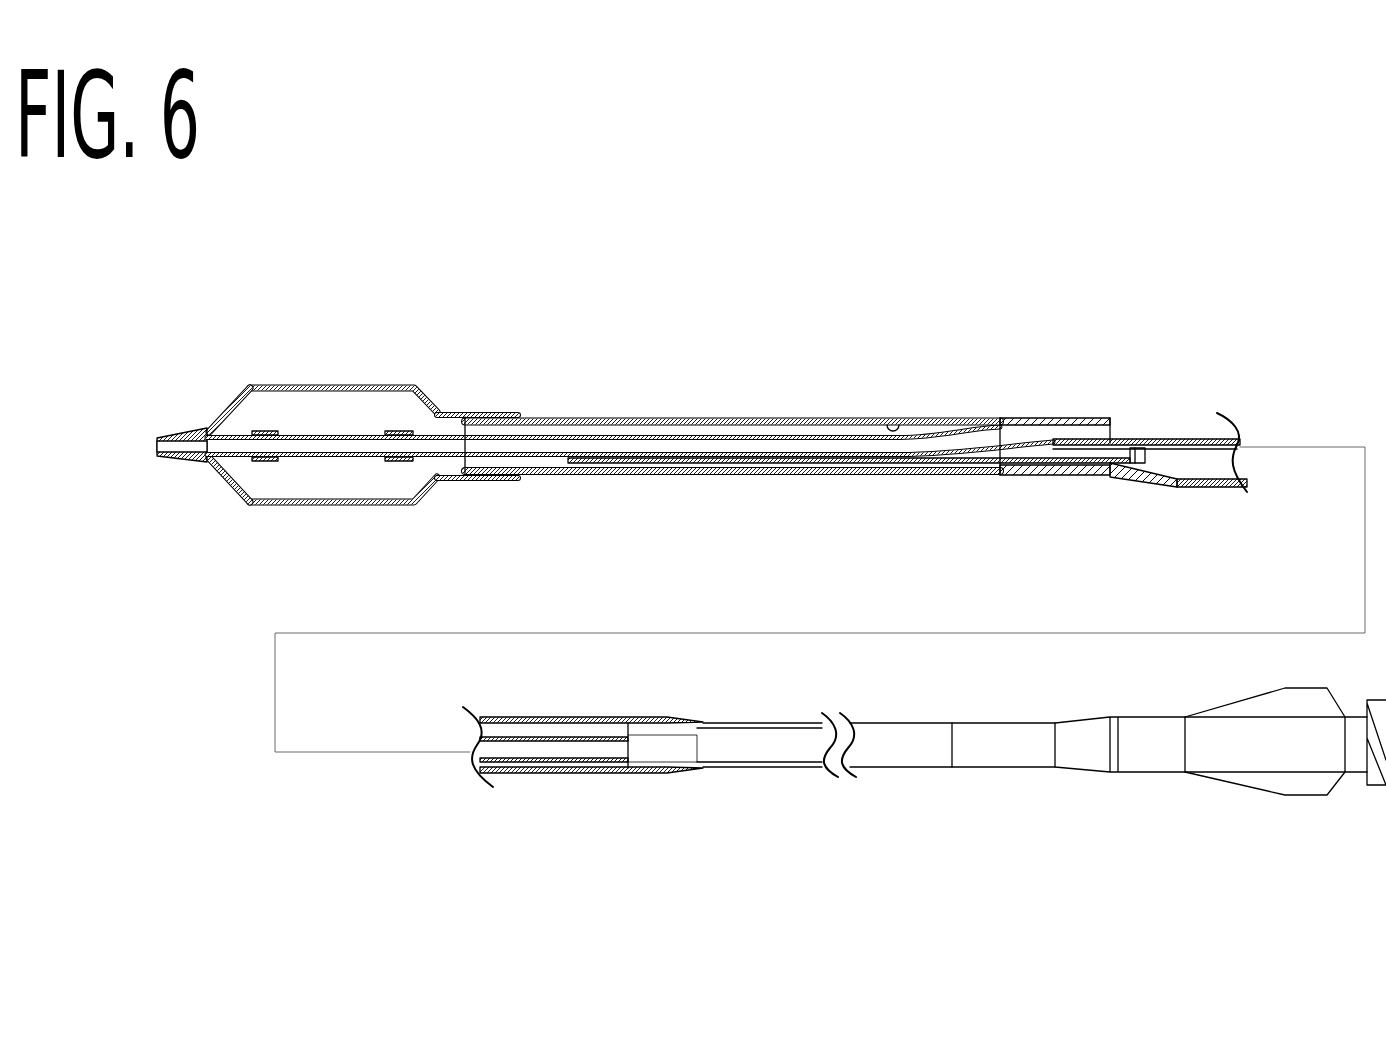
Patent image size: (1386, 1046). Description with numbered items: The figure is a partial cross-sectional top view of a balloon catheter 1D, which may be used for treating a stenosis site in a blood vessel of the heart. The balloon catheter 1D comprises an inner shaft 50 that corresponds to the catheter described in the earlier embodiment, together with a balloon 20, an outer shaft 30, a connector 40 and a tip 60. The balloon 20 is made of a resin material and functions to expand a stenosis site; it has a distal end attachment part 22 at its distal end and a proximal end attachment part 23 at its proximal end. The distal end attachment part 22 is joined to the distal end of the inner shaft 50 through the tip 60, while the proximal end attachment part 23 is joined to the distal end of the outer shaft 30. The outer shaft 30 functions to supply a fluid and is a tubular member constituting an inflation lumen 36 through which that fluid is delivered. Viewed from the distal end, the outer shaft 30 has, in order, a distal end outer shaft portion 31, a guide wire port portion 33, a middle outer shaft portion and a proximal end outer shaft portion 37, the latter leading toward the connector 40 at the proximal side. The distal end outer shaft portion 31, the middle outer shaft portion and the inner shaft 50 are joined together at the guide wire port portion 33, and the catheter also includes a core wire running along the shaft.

The balloon catheter 1D is at (908, 215).
The balloon 20 is at (330, 385).
The distal end attachment part 22 is at (205, 425).
The proximal end attachment part 23 is at (480, 413).
The tip 60 is at (165, 437).
The distal end outer shaft portion 31 is at (755, 477).
The inner shaft 50 is at (567, 430).
The outer shaft 30 is at (767, 414).
The inflation lumen 36 is at (901, 425).
The guide wire port portion 33 is at (1058, 477).
The proximal end outer shaft portion 37 is at (907, 768).
The connector 40 is at (1278, 795).